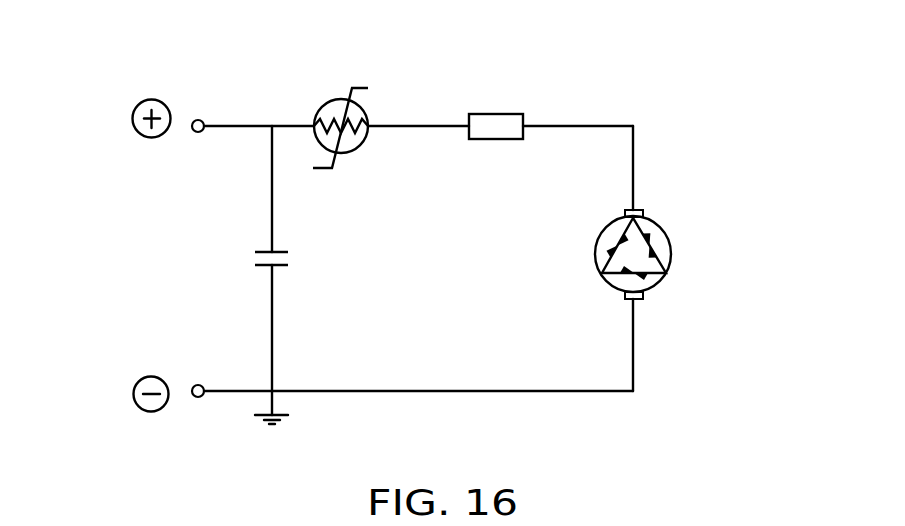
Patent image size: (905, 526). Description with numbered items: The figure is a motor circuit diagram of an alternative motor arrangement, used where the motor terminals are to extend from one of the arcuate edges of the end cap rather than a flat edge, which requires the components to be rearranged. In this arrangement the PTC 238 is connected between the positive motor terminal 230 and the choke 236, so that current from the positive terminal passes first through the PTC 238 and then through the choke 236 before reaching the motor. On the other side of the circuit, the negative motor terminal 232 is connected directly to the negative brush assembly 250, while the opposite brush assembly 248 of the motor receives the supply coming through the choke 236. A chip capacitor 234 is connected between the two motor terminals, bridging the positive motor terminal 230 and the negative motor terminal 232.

The positive motor terminal 230 is at (199, 120).
The negative motor terminal 232 is at (197, 397).
The chip capacitor 234 is at (268, 251).
The choke 236 is at (495, 113).
The PTC 238 is at (325, 110).
The motor brush 248 is at (635, 208).
The negative brush assembly 250 is at (637, 300).